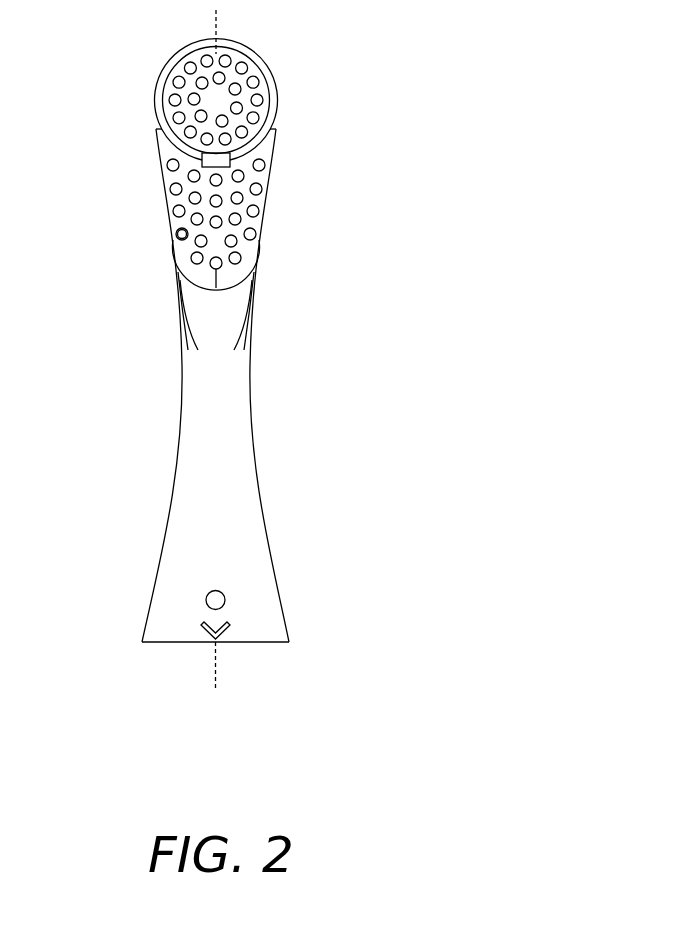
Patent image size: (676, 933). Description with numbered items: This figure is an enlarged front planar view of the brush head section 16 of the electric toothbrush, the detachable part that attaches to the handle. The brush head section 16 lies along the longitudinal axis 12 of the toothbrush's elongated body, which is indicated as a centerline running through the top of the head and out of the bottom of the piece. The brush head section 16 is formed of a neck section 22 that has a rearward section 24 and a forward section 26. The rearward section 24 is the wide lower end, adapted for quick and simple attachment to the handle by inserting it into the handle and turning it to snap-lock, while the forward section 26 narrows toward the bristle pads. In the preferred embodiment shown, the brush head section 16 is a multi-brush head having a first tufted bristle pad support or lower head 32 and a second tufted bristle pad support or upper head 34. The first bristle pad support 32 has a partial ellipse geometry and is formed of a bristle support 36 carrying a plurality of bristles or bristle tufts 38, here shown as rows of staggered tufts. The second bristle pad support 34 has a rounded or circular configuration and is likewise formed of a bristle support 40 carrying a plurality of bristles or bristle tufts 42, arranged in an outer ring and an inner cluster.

The longitudinal axis 12 is at (217, 23).
The brush head section 16 is at (270, 303).
The neck section 22 is at (253, 433).
The rearward section 24 is at (145, 620).
The forward section 26 is at (262, 283).
The first tufted bristle pad support 32 is at (166, 202).
The second tufted bristle pad support 34 is at (252, 67).
The bristle support 36 is at (177, 229).
The bristle tufts 38 is at (182, 234).
The bristle support 40 is at (173, 65).
The bristle tufts 42 is at (176, 83).